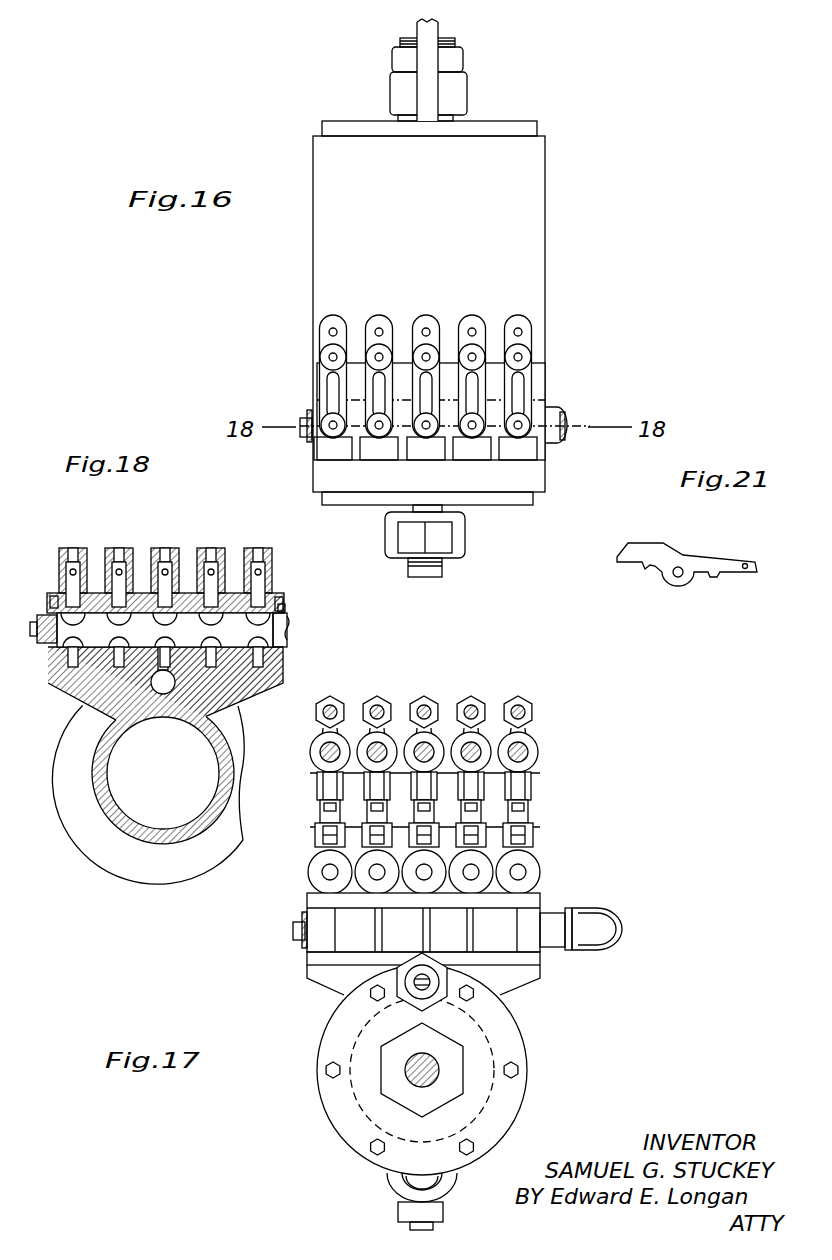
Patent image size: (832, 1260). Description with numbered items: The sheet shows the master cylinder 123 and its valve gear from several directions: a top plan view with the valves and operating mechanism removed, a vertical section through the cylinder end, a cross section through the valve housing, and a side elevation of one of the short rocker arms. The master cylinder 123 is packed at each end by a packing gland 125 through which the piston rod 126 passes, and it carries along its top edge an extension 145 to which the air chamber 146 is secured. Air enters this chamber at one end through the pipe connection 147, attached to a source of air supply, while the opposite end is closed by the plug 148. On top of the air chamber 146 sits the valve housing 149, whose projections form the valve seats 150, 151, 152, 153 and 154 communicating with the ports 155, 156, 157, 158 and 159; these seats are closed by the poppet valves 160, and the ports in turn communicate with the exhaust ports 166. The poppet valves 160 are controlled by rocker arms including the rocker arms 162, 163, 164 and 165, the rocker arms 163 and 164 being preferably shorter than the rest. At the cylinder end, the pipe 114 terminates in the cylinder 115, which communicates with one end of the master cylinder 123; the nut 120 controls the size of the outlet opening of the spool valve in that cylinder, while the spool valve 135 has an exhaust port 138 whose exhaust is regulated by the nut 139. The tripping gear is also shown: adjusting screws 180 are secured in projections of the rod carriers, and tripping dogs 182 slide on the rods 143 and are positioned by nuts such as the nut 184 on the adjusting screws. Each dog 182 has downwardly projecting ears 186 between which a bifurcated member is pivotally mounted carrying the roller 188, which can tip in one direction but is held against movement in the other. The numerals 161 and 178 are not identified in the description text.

In FIG. 17, the pipe 114 is at (462, 1181).
In FIG. 17, the cylinder 115 is at (393, 1187).
In FIG. 16, the nut 120 is at (466, 62).
In FIG. 18, the master cylinder 123 is at (112, 803).
In FIG. 17, the master cylinder 123 is at (357, 1092).
In FIG. 16, the packing gland 125 is at (467, 97).
In FIG. 17, the packing gland 125 is at (458, 1092).
In FIG. 16, the piston rod 126 is at (416, 30).
In FIG. 17, the piston rod 126 is at (403, 1060).
In FIG. 16, the spool valve 135 is at (432, 108).
In FIG. 17, the spool valve 135 is at (416, 992).
In FIG. 16, the exhaust port 138 is at (427, 500).
In FIG. 16, the nut 139 is at (443, 540).
In FIG. 17, the nut 139 is at (443, 998).
In FIG. 17, the rods 143 is at (380, 750).
In FIG. 16, the extension 145 is at (491, 250).
In FIG. 18, the extension 145 is at (280, 693).
In FIG. 17, the extension 145 is at (537, 980).
In FIG. 16, the air chamber 146 is at (312, 407).
In FIG. 18, the air chamber 146 is at (293, 628).
In FIG. 17, the air chamber 146 is at (556, 886).
In FIG. 16, the pipe connection 147 is at (550, 412).
In FIG. 18, the pipe connection 147 is at (292, 621).
In FIG. 17, the pipe connection 147 is at (553, 938).
In FIG. 16, the plug 148 is at (305, 440).
In FIG. 18, the plug 148 is at (42, 644).
In FIG. 17, the plug 148 is at (300, 920).
In FIG. 18, the valve housing 149 is at (279, 594).
In FIG. 18, the valve seat 150 is at (286, 606).
In FIG. 18, the valve seat 151 is at (204, 621).
In FIG. 18, the valve seat 152 is at (156, 621).
In FIG. 18, the valve seat 153 is at (109, 621).
In FIG. 18, the valve seat 154 is at (62, 596).
In FIG. 18, the port 155 is at (268, 578).
In FIG. 18, the port 156 is at (222, 583).
In FIG. 18, the port 157 is at (171, 582).
In FIG. 18, the port 158 is at (123, 582).
In FIG. 18, the port 159 is at (62, 592).
In FIG. 16, the poppet valve 160 is at (522, 430).
In FIG. 17, the poppet valve 160 is at (318, 843).
In FIG. 17, the bracket 161 is at (526, 818).
In FIG. 21, the rocker arm 162 is at (712, 558).
In FIG. 17, the rocker arm 162 is at (472, 822).
In FIG. 17, the rocker arm 163 is at (426, 822).
In FIG. 17, the rocker arm 164 is at (380, 822).
In FIG. 17, the rocker arm 165 is at (330, 826).
In FIG. 18, the exhaust port 166 is at (108, 595).
In FIG. 18, the passage 178 is at (163, 700).
In FIG. 17, the adjusting screw 180 is at (518, 703).
In FIG. 17, the tripping dog 182 is at (317, 760).
In FIG. 17, the nut 184 is at (469, 703).
In FIG. 17, the ear 186 is at (531, 783).
In FIG. 17, the roller 188 is at (526, 806).